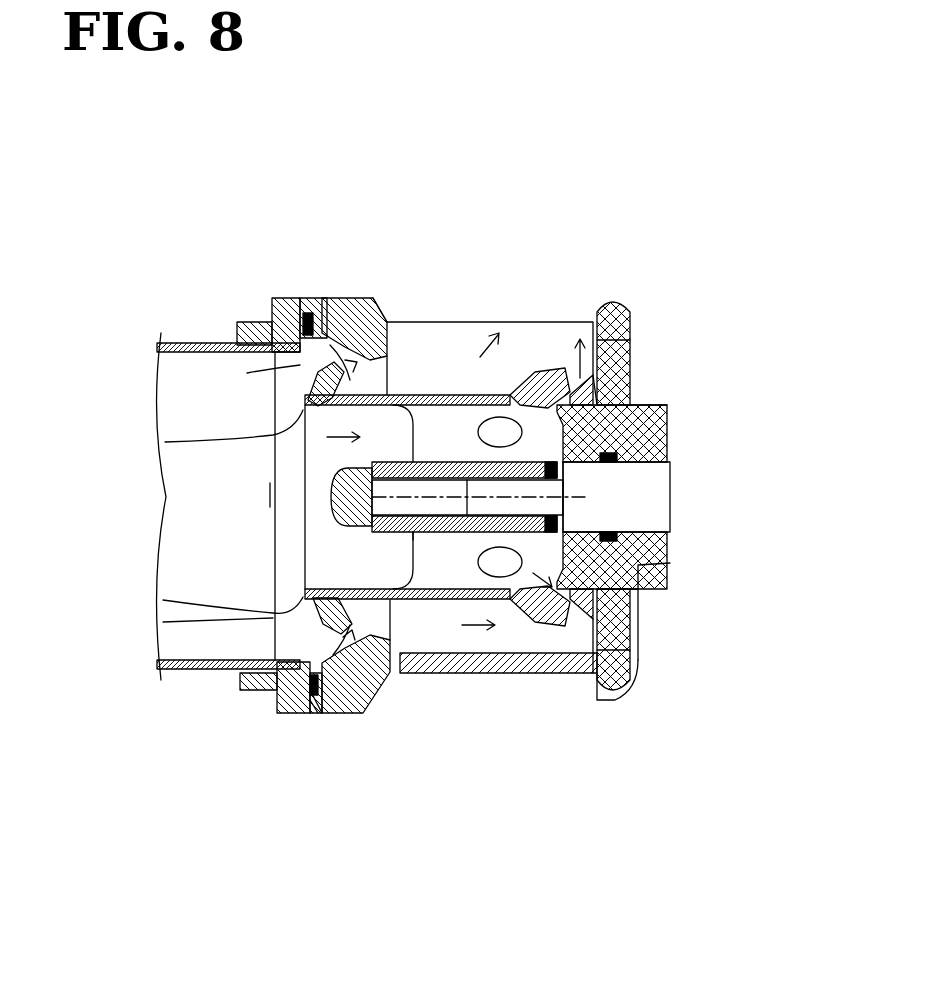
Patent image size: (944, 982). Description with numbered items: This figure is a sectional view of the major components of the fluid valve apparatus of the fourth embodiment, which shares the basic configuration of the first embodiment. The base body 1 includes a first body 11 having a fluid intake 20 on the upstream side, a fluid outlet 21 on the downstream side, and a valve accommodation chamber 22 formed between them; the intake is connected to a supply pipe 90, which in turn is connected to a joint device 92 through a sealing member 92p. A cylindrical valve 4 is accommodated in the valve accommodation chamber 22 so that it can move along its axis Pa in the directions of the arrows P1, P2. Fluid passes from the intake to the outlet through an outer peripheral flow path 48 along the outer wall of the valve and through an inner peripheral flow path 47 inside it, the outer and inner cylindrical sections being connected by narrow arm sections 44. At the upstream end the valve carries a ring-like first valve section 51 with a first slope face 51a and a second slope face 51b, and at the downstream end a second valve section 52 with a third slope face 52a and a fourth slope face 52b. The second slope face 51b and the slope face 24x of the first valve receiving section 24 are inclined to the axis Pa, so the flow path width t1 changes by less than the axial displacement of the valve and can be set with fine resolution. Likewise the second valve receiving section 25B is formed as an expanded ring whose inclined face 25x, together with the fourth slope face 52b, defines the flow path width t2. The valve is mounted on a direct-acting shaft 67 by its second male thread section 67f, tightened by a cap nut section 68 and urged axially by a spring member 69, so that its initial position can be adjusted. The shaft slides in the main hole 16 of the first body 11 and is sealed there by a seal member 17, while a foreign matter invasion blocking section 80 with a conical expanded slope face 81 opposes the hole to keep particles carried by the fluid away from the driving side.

The base body 1 is at (678, 565).
The cylindrical valve 4 is at (450, 392).
The first body 11 is at (658, 548).
The main hole 16 is at (673, 443).
The seal member 17 is at (670, 409).
The fluid intake 20 is at (166, 372).
The fluid outlet 21 is at (463, 332).
The valve accommodation chamber 22 is at (598, 674).
The first valve receiving section 24 is at (362, 348).
The slope face 24x is at (343, 343).
The second valve receiving section 25B is at (610, 405).
The inclined face 25x is at (594, 380).
The arm section 44 is at (421, 433).
The inner peripheral flow path 47 is at (442, 600).
The outer peripheral flow path 48 is at (510, 380).
The first valve section 51 is at (170, 442).
The first slope face 51a is at (335, 366).
The second slope face 51b is at (382, 350).
The second valve section 52 is at (556, 385).
The third slope face 52a is at (522, 380).
The fourth slope face 52b is at (540, 385).
The direct-acting shaft 67 is at (672, 483).
The second male thread section 67f is at (418, 536).
The cap nut section 68 is at (346, 518).
The spring member 69 is at (600, 515).
The foreign matter invasion blocking section 80 is at (633, 586).
The expanded slope face 81 is at (600, 415).
The supply pipe 90 is at (160, 668).
The joint device 92 is at (278, 712).
The sealing member 92p is at (320, 712).
The direction of arrow P1 is at (283, 507).
The direction of arrow P2 is at (250, 493).
The axis of the cylindrical valve Pa is at (670, 486).
The flow path width of the first valve flow path t1 is at (384, 390).
The flow path width of the second valve flow path t2 is at (500, 492).